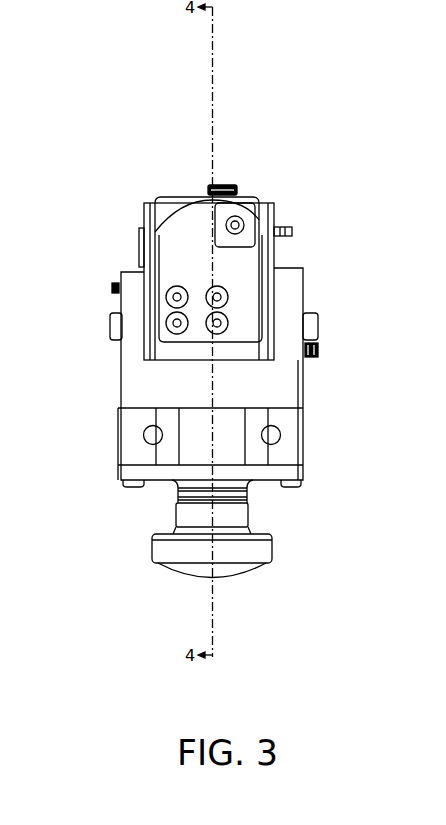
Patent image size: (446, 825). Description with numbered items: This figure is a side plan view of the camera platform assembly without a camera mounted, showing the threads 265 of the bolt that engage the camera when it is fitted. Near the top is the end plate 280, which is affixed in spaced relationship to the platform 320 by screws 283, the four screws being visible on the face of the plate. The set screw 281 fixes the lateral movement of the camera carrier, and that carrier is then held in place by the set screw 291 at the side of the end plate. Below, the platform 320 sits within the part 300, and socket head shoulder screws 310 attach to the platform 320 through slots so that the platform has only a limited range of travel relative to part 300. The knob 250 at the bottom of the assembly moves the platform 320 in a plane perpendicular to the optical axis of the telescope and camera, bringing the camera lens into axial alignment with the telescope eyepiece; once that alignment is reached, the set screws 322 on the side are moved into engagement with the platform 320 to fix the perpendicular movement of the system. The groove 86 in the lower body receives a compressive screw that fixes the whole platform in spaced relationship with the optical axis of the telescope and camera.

The space or groove 86 is at (290, 434).
The knob 250 is at (252, 548).
The threads of the bolt 265 is at (226, 186).
The end plate 280 is at (248, 273).
The set screw 281 is at (237, 222).
The screws 283 is at (227, 327).
The set screw 291 is at (292, 230).
The part 300 is at (193, 380).
The socket head shoulder screws 310 is at (112, 287).
The platform 320 is at (190, 350).
The set screws 322 is at (318, 350).